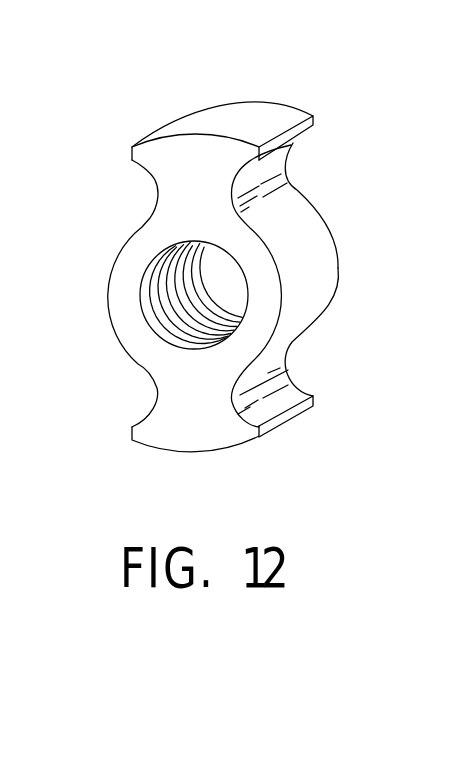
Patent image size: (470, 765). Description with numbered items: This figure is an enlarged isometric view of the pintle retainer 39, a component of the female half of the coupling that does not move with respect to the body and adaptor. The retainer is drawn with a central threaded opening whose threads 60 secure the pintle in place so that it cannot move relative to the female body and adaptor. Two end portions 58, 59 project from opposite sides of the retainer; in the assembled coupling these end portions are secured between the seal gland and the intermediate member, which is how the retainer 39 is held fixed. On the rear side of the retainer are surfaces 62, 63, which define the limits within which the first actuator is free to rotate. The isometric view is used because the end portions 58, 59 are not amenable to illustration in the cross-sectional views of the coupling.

The pintle retainer 39 is at (210, 188).
The end portion 58 is at (212, 123).
The end portion 59 is at (207, 433).
The threads 60 is at (167, 307).
The surface 62 is at (294, 143).
The surface 63 is at (288, 366).